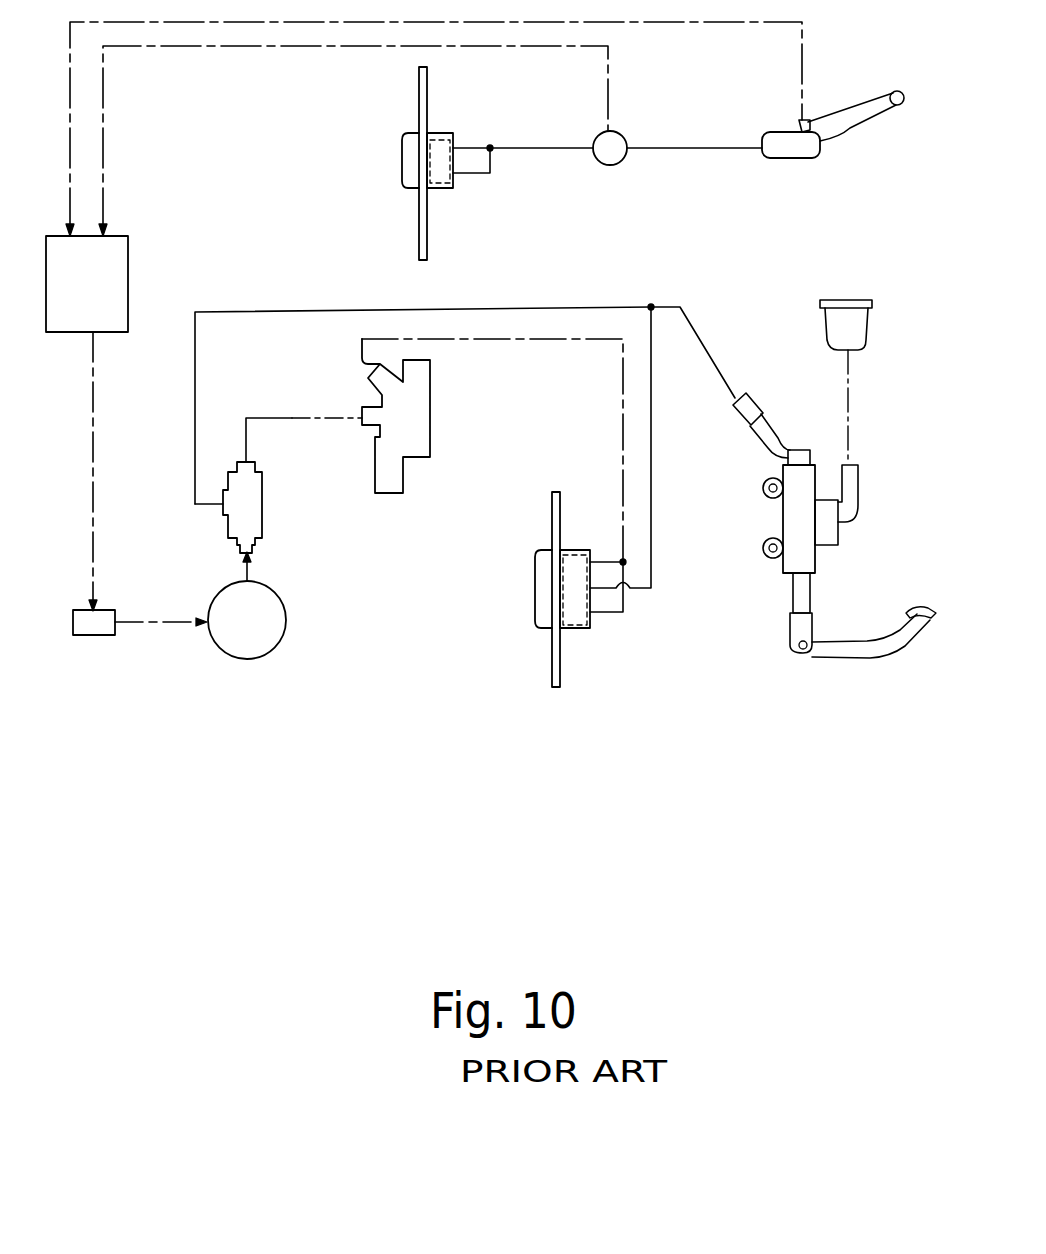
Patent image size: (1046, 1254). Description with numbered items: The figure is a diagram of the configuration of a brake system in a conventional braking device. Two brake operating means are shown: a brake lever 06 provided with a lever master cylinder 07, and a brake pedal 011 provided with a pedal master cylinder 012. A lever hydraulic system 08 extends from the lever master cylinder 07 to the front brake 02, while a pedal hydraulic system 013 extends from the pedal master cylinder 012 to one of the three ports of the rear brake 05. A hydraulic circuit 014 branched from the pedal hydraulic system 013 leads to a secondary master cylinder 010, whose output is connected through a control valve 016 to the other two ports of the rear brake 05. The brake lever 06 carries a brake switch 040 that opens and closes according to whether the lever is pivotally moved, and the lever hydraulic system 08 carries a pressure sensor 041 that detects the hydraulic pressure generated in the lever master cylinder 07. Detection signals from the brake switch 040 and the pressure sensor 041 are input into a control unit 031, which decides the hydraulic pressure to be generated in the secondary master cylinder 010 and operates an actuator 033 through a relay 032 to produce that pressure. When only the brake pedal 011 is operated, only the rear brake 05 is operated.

The front hydraulic brake 02 is at (402, 128).
The rear hydraulic brake 05 is at (531, 623).
The brake lever 06 is at (852, 126).
The lever master cylinder 07 is at (783, 160).
The lever hydraulic system 08 is at (683, 150).
The secondary master cylinder 010 is at (262, 510).
The brake pedal 011 is at (908, 610).
The pedal master cylinder 012 is at (783, 515).
The pedal hydraulic system 013 is at (710, 352).
The hydraulic circuit 014 is at (318, 312).
The control valve 016 is at (430, 412).
The control unit 031 is at (128, 277).
The relay 032 is at (93, 635).
The actuator 033 is at (275, 647).
The brake switch 040 is at (797, 125).
The pressure sensor 041 is at (605, 165).